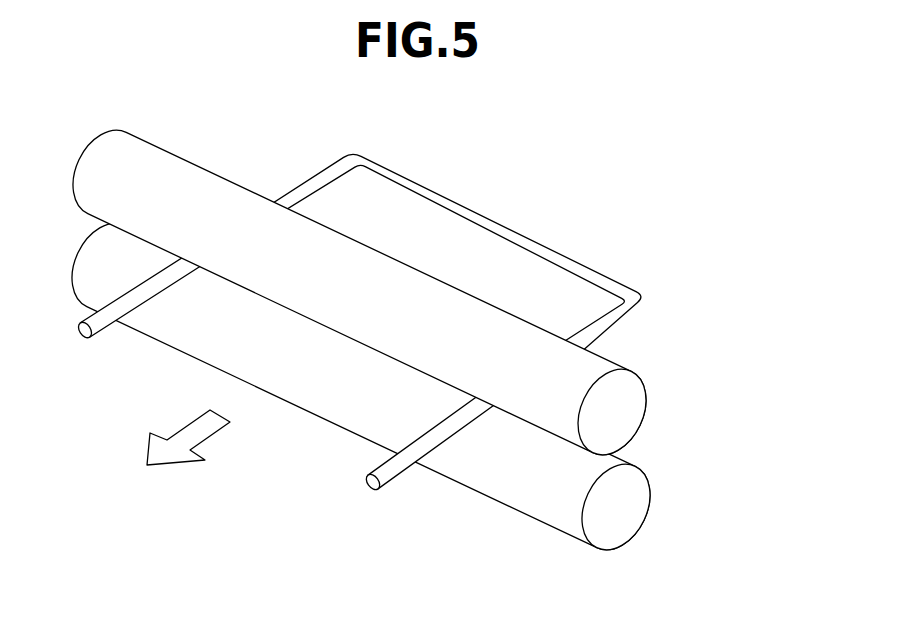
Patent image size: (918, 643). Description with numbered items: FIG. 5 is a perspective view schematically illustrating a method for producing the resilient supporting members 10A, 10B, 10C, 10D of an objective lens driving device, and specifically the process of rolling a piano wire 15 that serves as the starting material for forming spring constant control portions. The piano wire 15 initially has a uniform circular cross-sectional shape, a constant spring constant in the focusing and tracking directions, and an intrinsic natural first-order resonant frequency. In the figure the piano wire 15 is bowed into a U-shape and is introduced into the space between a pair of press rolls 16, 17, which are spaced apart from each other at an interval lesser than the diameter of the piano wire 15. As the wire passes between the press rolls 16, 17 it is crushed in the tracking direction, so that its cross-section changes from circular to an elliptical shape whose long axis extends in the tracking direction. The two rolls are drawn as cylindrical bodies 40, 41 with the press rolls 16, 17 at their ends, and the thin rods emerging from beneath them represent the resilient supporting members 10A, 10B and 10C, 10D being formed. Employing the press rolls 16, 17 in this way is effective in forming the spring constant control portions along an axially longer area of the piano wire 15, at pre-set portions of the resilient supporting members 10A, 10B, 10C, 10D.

The upper roller 40 is at (212, 197).
The lower roller 41 is at (518, 485).
The piano wire 15 is at (557, 252).
The press roll 16 is at (628, 406).
The press roll 17 is at (628, 500).
The resilient supporting member 10A is at (395, 470).
The resilient supporting member 10B is at (391, 483).
The resilient supporting member 10C is at (139, 330).
The resilient supporting member 10D is at (107, 322).